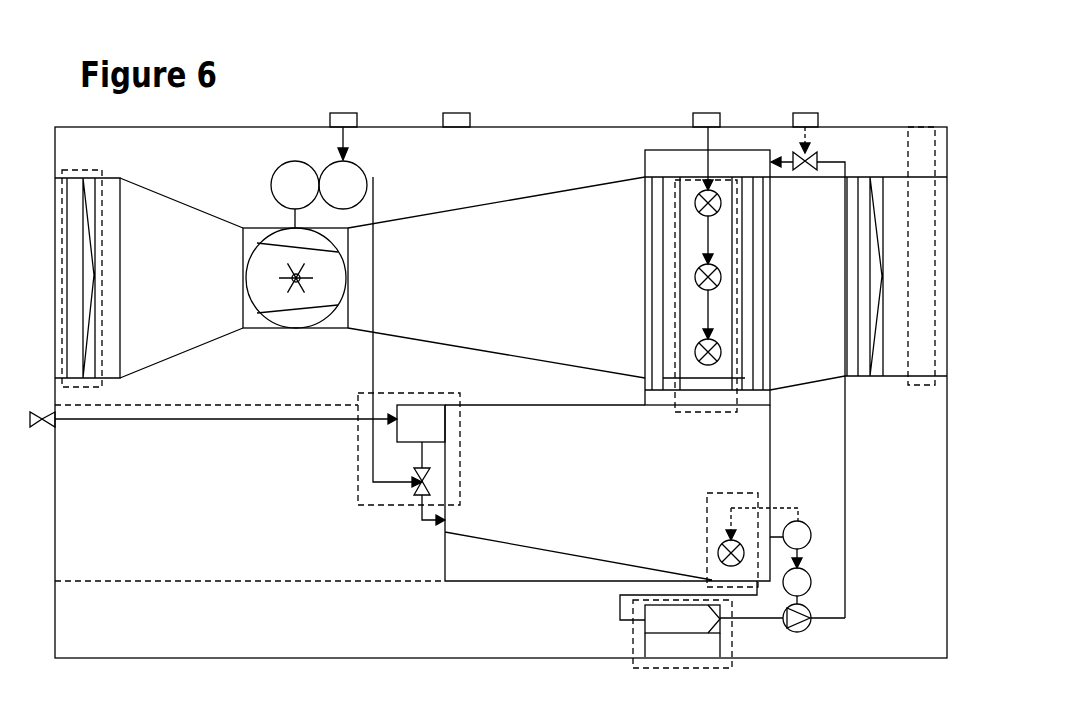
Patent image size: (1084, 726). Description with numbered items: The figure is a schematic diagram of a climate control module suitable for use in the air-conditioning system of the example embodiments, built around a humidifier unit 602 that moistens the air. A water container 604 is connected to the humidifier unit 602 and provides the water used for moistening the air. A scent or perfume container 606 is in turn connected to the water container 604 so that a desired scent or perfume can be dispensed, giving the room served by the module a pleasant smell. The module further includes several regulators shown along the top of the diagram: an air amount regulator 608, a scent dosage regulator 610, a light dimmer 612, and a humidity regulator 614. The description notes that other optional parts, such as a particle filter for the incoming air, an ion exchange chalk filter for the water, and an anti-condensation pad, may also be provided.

The humidifier unit 602 is at (678, 303).
The water container 604 is at (567, 523).
The scent or perfume container 606 is at (407, 442).
The air amount regulator 608 is at (347, 113).
The scent dosage regulator 610 is at (460, 113).
The light dimmer 612 is at (710, 113).
The humidity regulator 614 is at (810, 113).